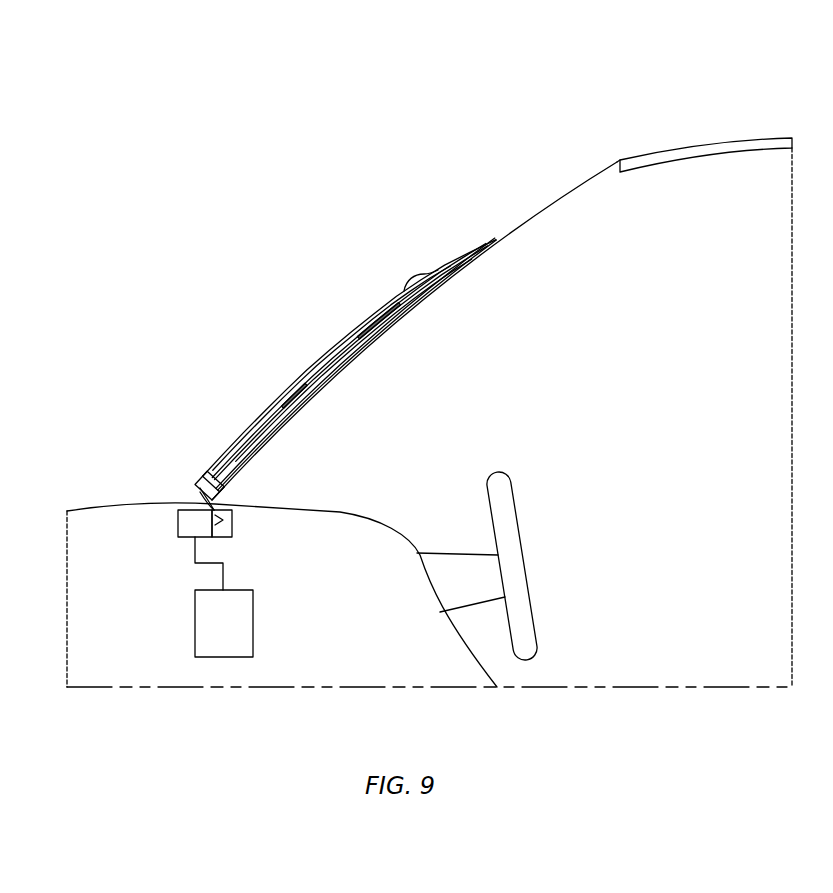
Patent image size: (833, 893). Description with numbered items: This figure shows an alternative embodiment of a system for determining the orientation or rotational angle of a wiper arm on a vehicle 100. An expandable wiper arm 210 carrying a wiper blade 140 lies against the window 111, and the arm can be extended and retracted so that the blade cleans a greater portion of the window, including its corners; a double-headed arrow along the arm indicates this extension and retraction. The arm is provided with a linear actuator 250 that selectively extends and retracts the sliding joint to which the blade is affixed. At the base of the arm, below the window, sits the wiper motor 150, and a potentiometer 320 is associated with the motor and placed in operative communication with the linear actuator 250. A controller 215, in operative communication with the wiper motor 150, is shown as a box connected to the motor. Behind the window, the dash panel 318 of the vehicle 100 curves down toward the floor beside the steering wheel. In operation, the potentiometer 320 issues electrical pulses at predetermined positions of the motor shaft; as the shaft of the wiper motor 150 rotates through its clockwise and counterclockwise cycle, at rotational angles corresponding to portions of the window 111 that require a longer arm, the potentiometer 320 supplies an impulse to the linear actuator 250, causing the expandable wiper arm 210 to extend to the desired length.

The vehicle 100 is at (683, 107).
The window 111 is at (573, 192).
The wiper blade 140 is at (455, 265).
The expandable wiper arm 210 is at (375, 288).
The linear actuator 250 is at (285, 392).
The wiper motor 150 is at (177, 522).
The potentiometer 320 is at (232, 523).
The controller 215 is at (195, 622).
The dash panel 318 is at (392, 540).